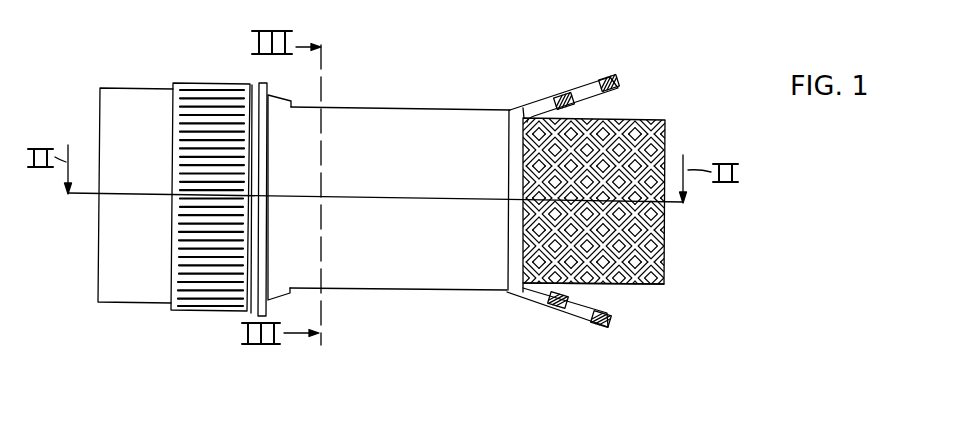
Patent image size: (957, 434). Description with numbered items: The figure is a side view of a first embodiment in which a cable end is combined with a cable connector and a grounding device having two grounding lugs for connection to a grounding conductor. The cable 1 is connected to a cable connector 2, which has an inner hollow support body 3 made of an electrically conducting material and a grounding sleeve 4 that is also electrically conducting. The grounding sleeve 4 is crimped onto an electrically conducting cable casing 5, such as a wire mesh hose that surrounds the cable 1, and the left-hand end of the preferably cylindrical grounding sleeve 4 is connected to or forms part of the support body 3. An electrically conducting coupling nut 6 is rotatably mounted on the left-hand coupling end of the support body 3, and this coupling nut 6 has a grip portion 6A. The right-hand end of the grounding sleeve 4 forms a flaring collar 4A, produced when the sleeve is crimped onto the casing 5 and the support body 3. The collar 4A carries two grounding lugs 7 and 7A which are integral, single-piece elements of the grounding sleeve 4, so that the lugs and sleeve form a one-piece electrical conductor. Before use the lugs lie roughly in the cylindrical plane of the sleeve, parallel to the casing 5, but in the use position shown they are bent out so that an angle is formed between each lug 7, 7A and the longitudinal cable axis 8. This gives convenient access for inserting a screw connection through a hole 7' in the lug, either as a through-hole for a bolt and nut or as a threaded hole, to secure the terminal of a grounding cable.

The cable 1 is at (668, 112).
The cable connector 2 is at (387, 83).
The inner hollow support body 3 is at (263, 83).
The grounding sleeve 4 is at (438, 107).
The flaring collar 4A is at (513, 294).
The cable casing 5 is at (641, 285).
The coupling nut 6 is at (143, 106).
The grip portion 6A is at (170, 313).
The grounding lug 7 is at (587, 76).
The hole 7' is at (574, 184).
The grounding lug 7A is at (600, 326).
The longitudinal cable axis 8 is at (455, 197).